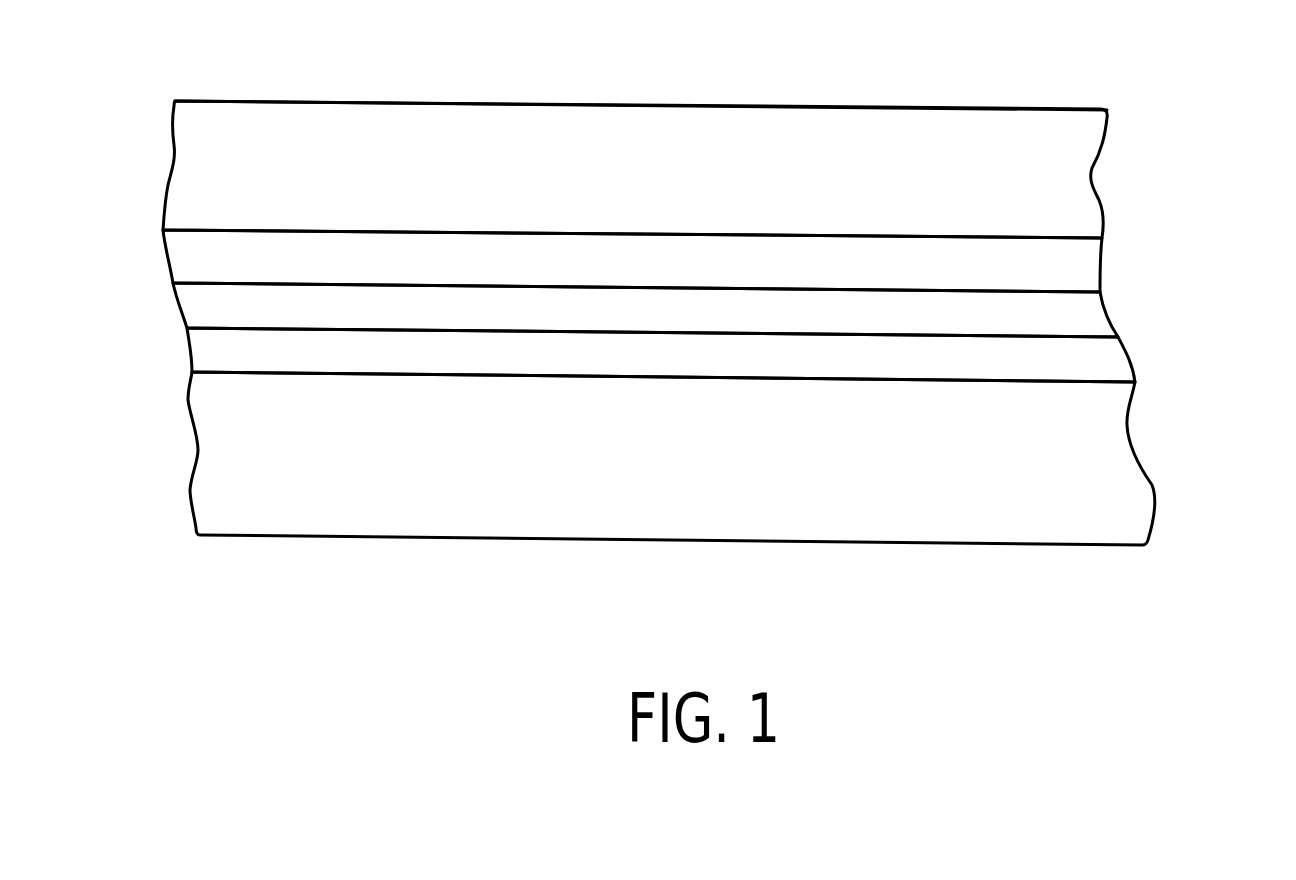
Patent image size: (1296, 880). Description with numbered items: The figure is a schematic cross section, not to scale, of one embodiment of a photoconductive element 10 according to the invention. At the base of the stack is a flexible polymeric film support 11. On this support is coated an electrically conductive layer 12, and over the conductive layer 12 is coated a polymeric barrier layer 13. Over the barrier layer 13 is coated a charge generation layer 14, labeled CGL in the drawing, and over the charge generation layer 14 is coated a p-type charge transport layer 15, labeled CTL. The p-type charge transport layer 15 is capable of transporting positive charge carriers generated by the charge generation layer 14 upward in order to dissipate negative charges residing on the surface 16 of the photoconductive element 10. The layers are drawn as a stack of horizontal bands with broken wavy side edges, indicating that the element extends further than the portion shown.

The photoconductive element 10 is at (682, 284).
The flexible polymeric film support 11 is at (1183, 365).
The electrically conductive layer 12 is at (188, 355).
The polymeric barrier layer 13 is at (172, 310).
The charge generation layer 14 is at (163, 248).
The p-type charge transport layer 15 is at (1098, 195).
The surface 16 is at (980, 108).